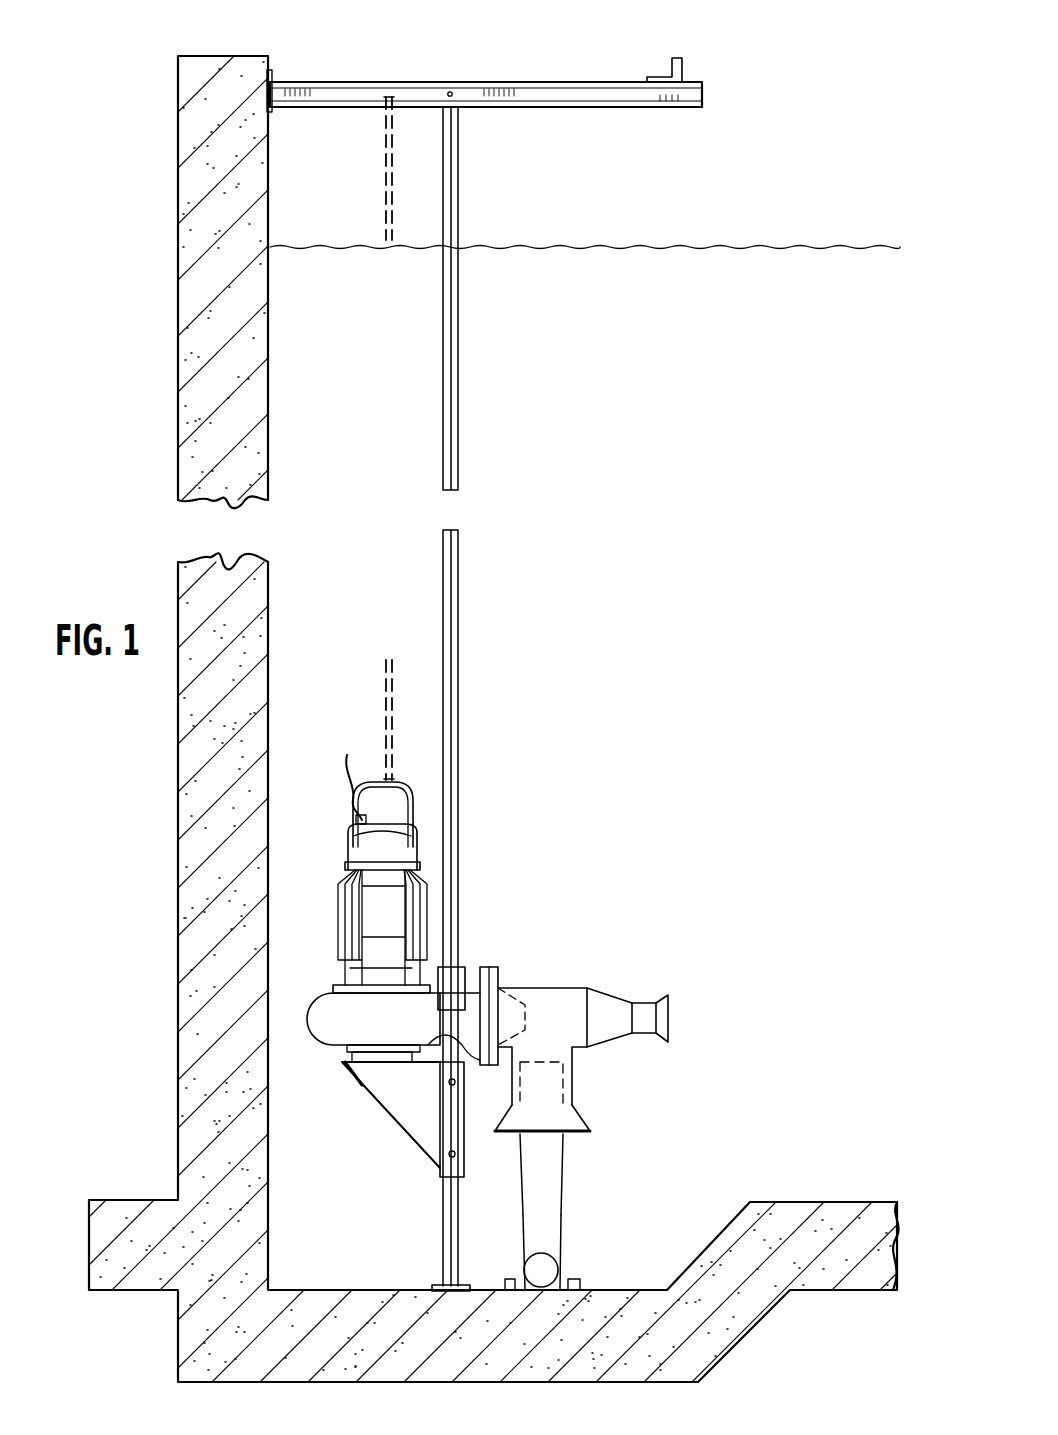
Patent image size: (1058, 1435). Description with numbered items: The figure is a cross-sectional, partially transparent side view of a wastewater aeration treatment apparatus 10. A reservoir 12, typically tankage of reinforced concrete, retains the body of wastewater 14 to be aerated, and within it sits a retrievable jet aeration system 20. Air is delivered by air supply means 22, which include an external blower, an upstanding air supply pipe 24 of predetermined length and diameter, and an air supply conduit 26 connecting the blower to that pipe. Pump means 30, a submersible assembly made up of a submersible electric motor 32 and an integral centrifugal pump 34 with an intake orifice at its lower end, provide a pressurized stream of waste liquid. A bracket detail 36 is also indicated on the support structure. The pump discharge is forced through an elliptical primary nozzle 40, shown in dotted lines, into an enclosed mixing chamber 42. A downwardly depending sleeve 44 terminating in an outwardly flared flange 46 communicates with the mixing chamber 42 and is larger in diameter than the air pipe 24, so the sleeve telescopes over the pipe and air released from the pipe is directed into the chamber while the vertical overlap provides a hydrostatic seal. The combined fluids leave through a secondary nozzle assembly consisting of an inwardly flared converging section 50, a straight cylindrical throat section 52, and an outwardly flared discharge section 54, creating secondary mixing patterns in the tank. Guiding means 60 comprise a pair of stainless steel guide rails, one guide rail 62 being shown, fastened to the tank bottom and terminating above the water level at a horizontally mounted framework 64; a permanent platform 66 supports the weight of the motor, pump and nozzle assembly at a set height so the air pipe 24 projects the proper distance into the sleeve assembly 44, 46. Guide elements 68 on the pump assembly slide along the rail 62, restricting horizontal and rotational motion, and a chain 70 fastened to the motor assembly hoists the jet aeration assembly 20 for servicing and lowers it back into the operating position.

The wastewater aeration treatment apparatus 10 is at (740, 182).
The reservoir means 12 is at (178, 580).
The body of wastewater 14 is at (597, 387).
The jet aeration system 20 is at (490, 968).
The air supply means 22 is at (563, 1213).
The upstanding air supply pipe 24 is at (563, 1172).
The air supply conduit 26 is at (552, 1265).
The pump means 30 is at (336, 1030).
The submersible electric motor 32 is at (338, 937).
The centrifugal pump 34 is at (318, 1000).
The bracket corner 36 is at (362, 1086).
The elliptical nozzle 40 is at (530, 982).
The mixing chamber 42 is at (556, 1000).
The downwardly depending sleeve 44 is at (575, 1090).
The outwardly flared flange 46 is at (582, 1130).
The converging section 50 is at (610, 993).
The straight cylindrical throat section 52 is at (648, 1004).
The outwardly flared discharge section 54 is at (667, 1030).
The guiding means 60 is at (460, 846).
The guide rail 62 is at (460, 722).
The horizontally mounted framework 64 is at (608, 42).
The permanent platform 66 is at (412, 1108).
The guide elements 68 is at (464, 972).
The chain 70 is at (385, 148).